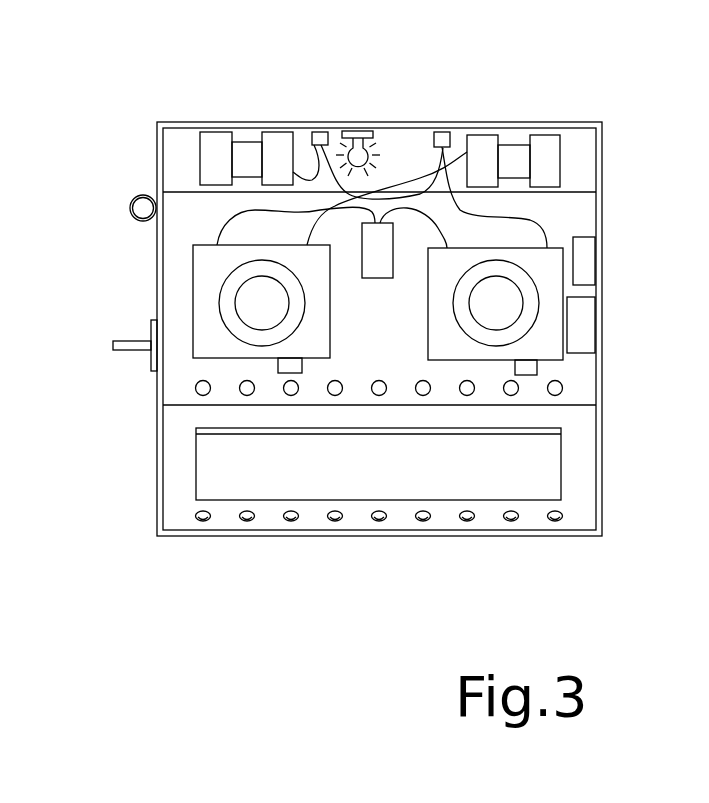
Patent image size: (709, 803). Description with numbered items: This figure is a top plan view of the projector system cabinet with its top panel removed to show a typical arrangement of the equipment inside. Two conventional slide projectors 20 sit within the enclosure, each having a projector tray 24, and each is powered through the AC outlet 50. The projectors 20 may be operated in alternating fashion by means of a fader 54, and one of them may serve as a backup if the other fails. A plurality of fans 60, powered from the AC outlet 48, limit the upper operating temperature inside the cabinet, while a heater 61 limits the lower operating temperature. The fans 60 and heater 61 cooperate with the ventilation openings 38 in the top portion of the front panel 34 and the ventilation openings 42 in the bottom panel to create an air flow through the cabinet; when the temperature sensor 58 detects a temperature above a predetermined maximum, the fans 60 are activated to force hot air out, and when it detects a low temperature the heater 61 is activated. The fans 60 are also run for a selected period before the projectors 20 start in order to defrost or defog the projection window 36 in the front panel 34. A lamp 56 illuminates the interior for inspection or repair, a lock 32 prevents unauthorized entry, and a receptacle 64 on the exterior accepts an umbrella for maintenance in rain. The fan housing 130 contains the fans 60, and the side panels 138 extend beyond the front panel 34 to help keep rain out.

The fan housing 130 is at (177, 165).
The side panels 138 is at (607, 443).
The front panel 34 is at (172, 503).
The receptacle 64 is at (145, 208).
The lock 32 is at (130, 352).
The fans 60 is at (213, 153).
The AC outlet 48 is at (315, 142).
The lamp 56 is at (356, 145).
The AC outlet 50 is at (443, 140).
The temperature sensor 58 is at (583, 270).
The heater 61 is at (577, 335).
The fader 54 is at (380, 257).
The slide projector 20 is at (193, 267).
The projector tray 24 is at (220, 305).
The ventilation openings 42 is at (379, 396).
The window 36 is at (213, 435).
The ventilation openings 38 is at (247, 521).